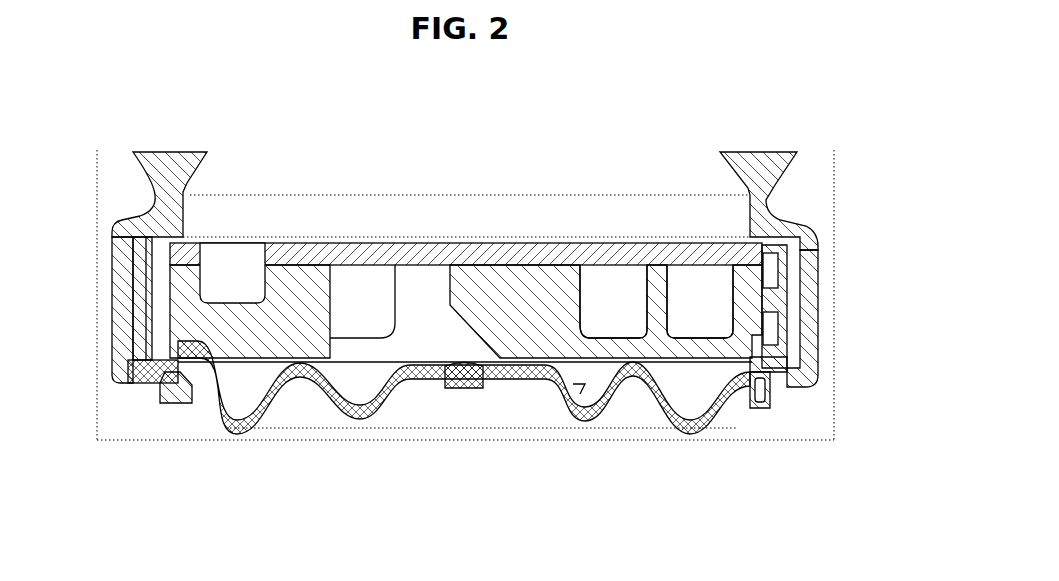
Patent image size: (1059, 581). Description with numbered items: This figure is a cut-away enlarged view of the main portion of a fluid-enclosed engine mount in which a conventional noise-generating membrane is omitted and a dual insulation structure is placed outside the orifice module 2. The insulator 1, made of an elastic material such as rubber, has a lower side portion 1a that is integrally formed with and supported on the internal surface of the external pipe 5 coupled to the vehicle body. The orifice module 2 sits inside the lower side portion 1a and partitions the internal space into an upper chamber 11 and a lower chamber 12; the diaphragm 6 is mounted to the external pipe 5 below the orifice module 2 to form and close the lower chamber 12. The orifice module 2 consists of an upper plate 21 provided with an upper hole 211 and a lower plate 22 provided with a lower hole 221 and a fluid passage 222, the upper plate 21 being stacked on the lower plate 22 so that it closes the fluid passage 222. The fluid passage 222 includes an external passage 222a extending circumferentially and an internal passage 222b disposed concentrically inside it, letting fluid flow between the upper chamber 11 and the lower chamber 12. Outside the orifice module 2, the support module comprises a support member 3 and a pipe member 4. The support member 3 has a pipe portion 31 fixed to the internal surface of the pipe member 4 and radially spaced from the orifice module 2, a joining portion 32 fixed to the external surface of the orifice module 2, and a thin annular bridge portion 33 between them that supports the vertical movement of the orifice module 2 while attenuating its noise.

The insulator 1 is at (503, 230).
The lower side portion 1a is at (800, 258).
The upper chamber 11 is at (502, 177).
The lower chamber 12 is at (584, 386).
The orifice module 2 is at (466, 309).
The upper plate 21 is at (466, 201).
The upper hole 211 is at (228, 253).
The lower plate 22 is at (466, 392).
The lower hole 221 is at (434, 340).
The fluid passage 222 is at (660, 392).
The external passage 222a is at (693, 320).
The internal passage 222b is at (613, 320).
The support member 3 is at (112, 368).
The pipe portion 31 is at (157, 302).
The joining portion 32 is at (152, 370).
The bridge portion 33 is at (128, 308).
The pipe member 4 is at (795, 293).
The external pipe 5 is at (118, 270).
The diaphragm 6 is at (238, 432).